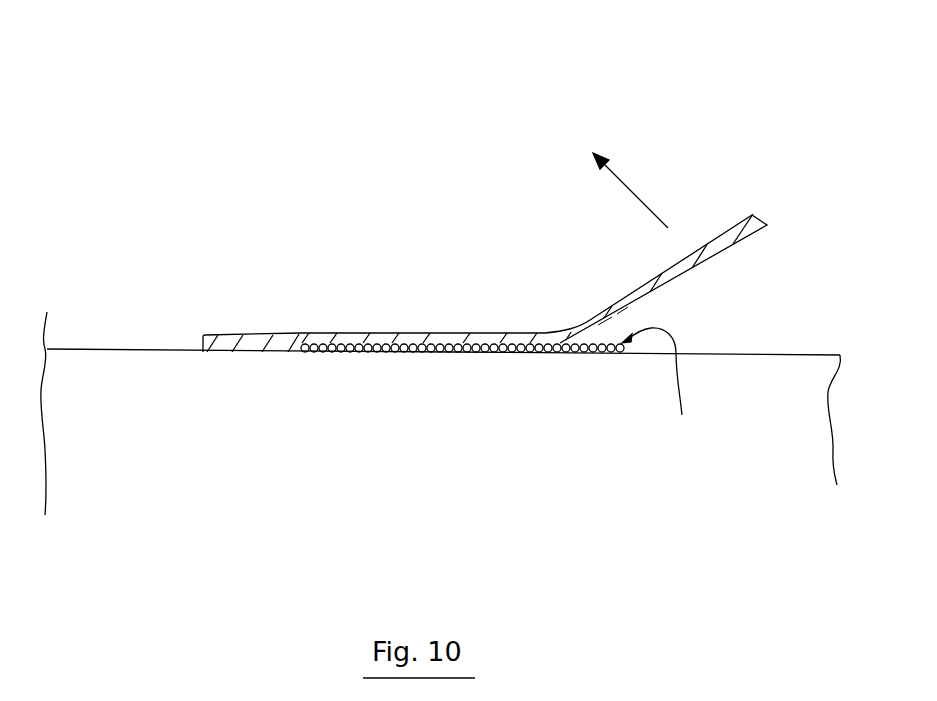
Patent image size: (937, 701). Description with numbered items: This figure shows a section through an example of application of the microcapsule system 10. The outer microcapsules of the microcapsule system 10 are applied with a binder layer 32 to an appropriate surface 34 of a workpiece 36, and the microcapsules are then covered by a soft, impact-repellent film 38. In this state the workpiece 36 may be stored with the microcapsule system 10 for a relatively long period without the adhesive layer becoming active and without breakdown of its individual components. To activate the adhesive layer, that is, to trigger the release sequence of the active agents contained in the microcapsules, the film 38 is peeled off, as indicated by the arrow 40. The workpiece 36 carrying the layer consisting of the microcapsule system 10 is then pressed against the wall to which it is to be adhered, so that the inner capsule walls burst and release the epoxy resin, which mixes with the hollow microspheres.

The microcapsule system 10 is at (664, 388).
The binder layer 32 is at (288, 353).
The surface 34 is at (130, 349).
The workpiece 36 is at (770, 368).
The film 38 is at (764, 222).
The arrow 40 is at (632, 192).